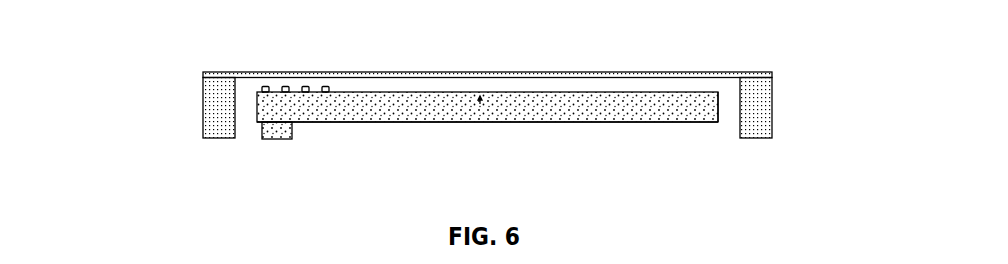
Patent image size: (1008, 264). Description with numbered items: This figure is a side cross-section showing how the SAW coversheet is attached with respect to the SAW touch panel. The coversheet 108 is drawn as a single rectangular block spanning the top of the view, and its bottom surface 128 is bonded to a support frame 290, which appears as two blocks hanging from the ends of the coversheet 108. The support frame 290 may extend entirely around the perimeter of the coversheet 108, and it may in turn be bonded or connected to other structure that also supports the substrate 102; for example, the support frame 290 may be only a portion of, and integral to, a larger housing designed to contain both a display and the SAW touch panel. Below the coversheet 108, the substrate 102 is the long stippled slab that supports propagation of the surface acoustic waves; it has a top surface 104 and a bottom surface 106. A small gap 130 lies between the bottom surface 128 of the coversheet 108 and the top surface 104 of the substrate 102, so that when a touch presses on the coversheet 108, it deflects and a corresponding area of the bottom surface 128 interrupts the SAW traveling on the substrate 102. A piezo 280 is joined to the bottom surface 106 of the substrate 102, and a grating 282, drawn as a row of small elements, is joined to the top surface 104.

The substrate 102 is at (670, 108).
The top surface 104 is at (683, 82).
The bottom surface 106 is at (583, 122).
The coversheet 108 is at (488, 83).
The bottom surface 128 is at (728, 78).
The gap 130 is at (478, 69).
The piezo 280 is at (280, 139).
The grating 282 is at (304, 93).
The support frame 290 is at (203, 100).